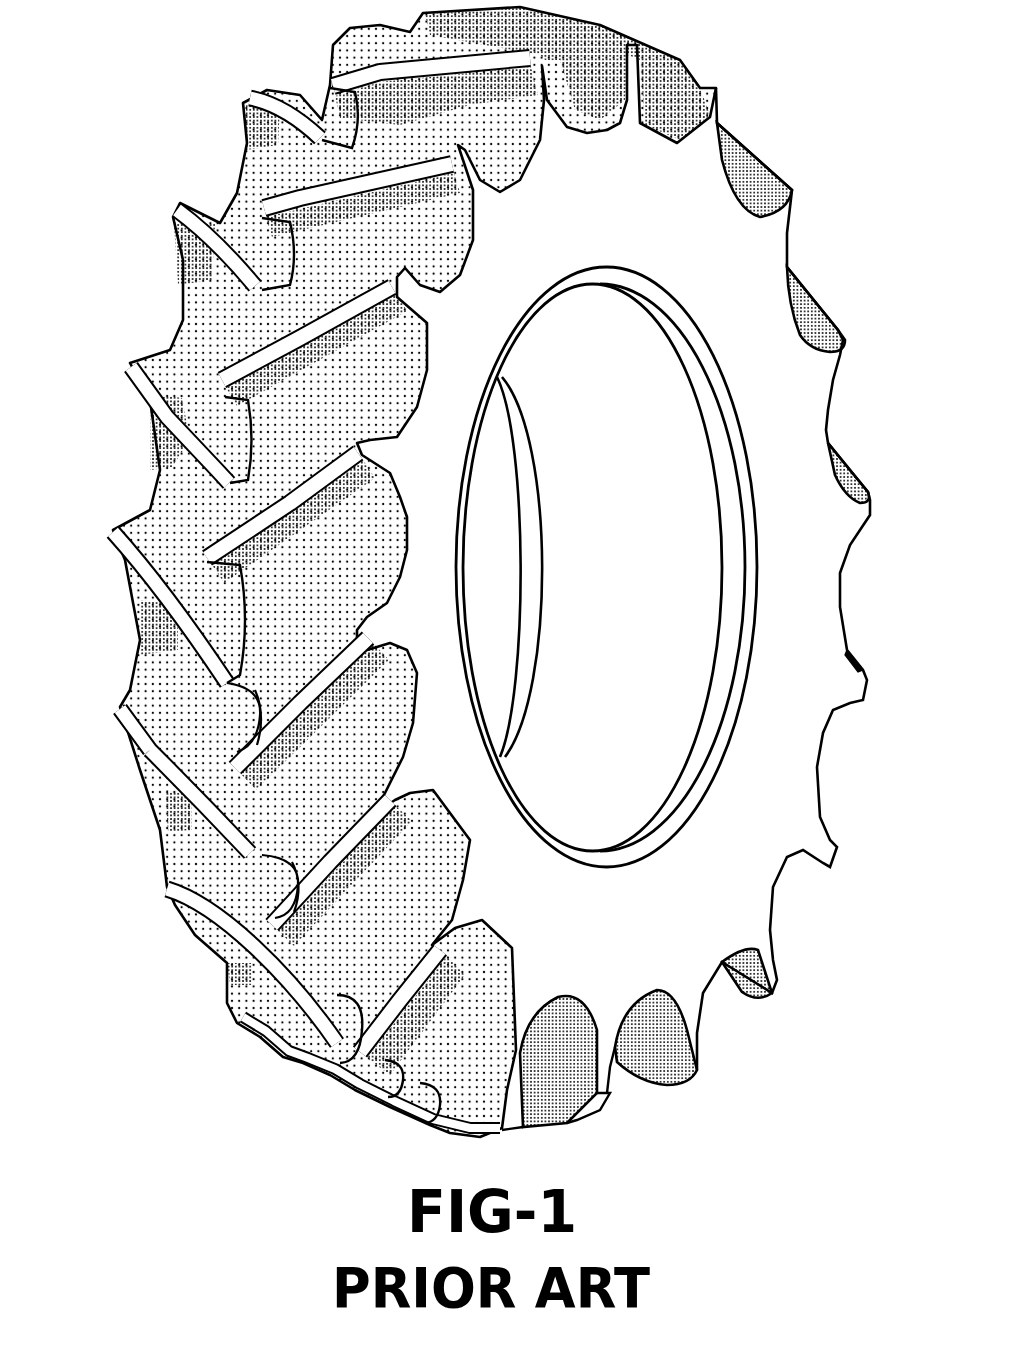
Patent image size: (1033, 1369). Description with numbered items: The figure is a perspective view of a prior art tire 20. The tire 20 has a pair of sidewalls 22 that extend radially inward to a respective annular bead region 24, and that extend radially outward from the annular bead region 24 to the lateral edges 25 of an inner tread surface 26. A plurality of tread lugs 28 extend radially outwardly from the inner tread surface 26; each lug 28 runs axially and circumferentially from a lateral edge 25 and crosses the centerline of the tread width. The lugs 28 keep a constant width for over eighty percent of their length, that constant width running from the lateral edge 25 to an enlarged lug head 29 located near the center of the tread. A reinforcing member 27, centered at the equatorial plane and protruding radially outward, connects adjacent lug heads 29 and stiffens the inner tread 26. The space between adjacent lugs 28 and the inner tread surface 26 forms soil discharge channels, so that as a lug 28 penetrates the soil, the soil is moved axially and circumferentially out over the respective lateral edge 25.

The tire 20 is at (491, 572).
The sidewalls 22 is at (787, 748).
The annular bead region 24 is at (737, 617).
The lateral edges 25 is at (805, 290).
The inner tread surface 26 is at (373, 927).
The reinforcing member 27 is at (233, 710).
The tread lugs 28 is at (140, 722).
The enlarged lug head 29 is at (253, 852).